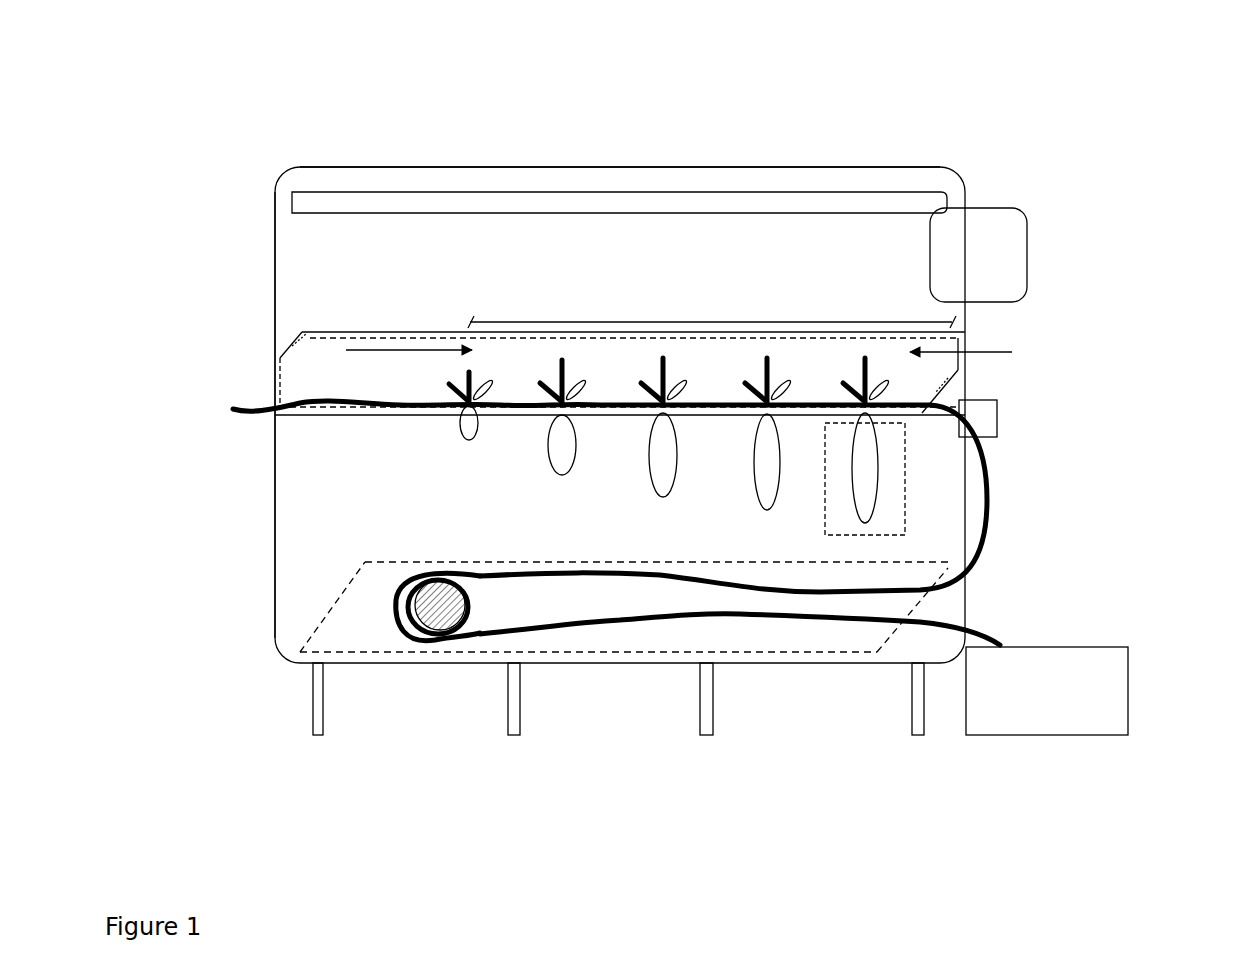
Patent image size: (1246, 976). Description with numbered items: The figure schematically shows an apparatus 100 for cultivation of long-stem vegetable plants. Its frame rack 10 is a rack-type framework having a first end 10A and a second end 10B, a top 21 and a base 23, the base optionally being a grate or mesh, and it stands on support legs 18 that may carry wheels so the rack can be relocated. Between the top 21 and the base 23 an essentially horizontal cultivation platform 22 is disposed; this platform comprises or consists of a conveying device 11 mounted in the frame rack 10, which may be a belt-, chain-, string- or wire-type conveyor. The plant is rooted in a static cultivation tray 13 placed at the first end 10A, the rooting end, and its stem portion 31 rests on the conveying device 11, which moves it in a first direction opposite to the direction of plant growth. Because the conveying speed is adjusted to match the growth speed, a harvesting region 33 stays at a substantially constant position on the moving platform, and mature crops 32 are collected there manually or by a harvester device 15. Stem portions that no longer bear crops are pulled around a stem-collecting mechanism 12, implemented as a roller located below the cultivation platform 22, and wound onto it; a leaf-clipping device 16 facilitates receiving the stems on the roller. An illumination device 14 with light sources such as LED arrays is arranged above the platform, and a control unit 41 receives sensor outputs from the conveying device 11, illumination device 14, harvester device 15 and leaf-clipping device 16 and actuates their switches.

The apparatus for cultivation of long-stem vegetable plants 100 is at (1157, 48).
The frame rack 10 is at (338, 165).
The top of the frame rack 21 is at (521, 165).
The conveying device 11 is at (312, 365).
The illumination device 14 is at (783, 203).
The control unit 41 is at (1015, 233).
The harvesting region 33 is at (712, 308).
The cultivation platform 22 is at (352, 330).
The leaf-clipping device 16 is at (988, 415).
The harvester device 15 is at (905, 470).
The long-stem vegetable plant stem portion 31 is at (628, 405).
The stem-collecting mechanism 12 is at (435, 598).
The crops 32 is at (757, 510).
The base of the frame rack 23 is at (350, 625).
The support legs 18 is at (705, 722).
The cultivation tray 13 is at (1082, 665).
The first end of the frame rack 10A is at (947, 667).
The second end of the frame rack 10B is at (283, 667).